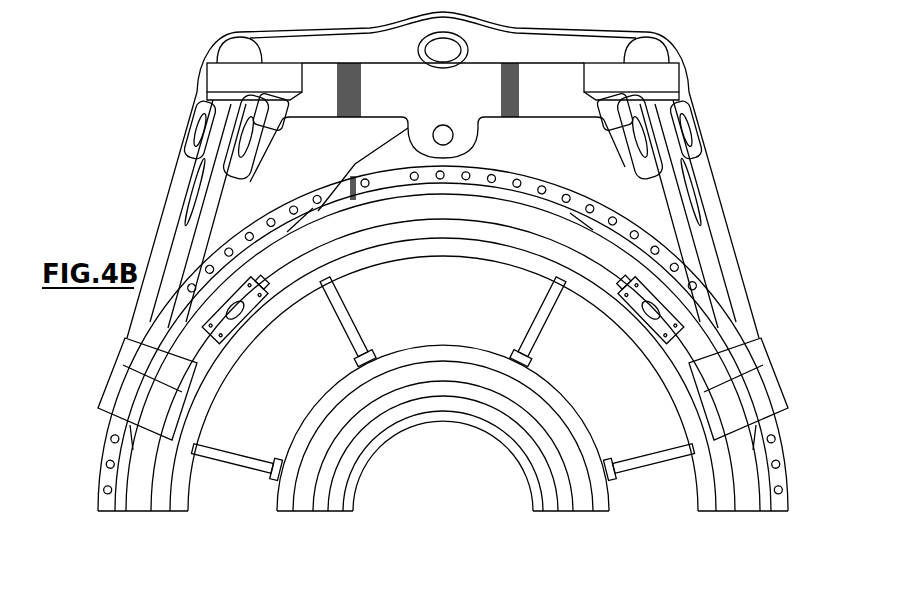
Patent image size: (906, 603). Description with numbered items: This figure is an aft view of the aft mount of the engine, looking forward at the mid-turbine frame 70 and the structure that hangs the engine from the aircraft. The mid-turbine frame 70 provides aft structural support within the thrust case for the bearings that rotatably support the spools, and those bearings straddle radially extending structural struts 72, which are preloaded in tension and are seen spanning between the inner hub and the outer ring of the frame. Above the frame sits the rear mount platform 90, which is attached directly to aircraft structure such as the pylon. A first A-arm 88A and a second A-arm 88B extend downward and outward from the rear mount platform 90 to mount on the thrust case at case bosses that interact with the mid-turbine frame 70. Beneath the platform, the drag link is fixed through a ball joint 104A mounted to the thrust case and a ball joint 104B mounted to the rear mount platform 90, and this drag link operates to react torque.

The mid-turbine frame 70 is at (578, 502).
The structural struts 72 is at (652, 465).
The first A-arm 88A is at (744, 207).
The second A-arm 88B is at (142, 207).
The rear mount platform 90 is at (658, 80).
The ball joint 104A is at (358, 172).
The ball joint 104B is at (458, 148).